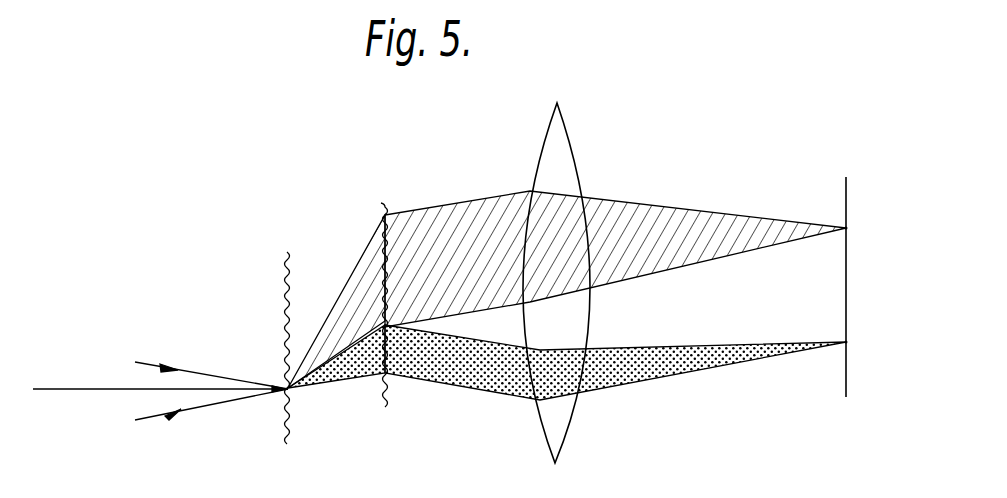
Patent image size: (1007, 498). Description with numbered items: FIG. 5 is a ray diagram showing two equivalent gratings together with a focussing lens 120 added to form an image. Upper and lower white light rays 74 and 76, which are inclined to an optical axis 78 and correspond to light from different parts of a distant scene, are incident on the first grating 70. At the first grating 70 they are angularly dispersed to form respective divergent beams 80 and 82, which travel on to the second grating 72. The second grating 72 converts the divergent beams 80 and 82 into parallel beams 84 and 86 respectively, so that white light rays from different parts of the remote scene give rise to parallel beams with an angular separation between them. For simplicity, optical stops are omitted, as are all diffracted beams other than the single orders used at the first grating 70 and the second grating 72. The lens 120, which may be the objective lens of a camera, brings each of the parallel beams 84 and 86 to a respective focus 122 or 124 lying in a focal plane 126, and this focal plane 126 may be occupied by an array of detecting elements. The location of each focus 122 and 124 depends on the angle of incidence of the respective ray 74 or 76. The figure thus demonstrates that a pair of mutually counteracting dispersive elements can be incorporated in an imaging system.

The first grating 70 is at (293, 360).
The second grating 72 is at (394, 319).
The upper white light ray 74 is at (148, 358).
The lower white light ray 76 is at (152, 420).
The optical axis 78 is at (83, 392).
The divergent beam 80 is at (347, 377).
The divergent beam 82 is at (362, 290).
The parallel beam 84 is at (475, 370).
The parallel beam 86 is at (465, 220).
The focussing lens 120 is at (562, 437).
The focus 122 is at (846, 342).
The focus 124 is at (846, 228).
The focal plane 126 is at (848, 186).